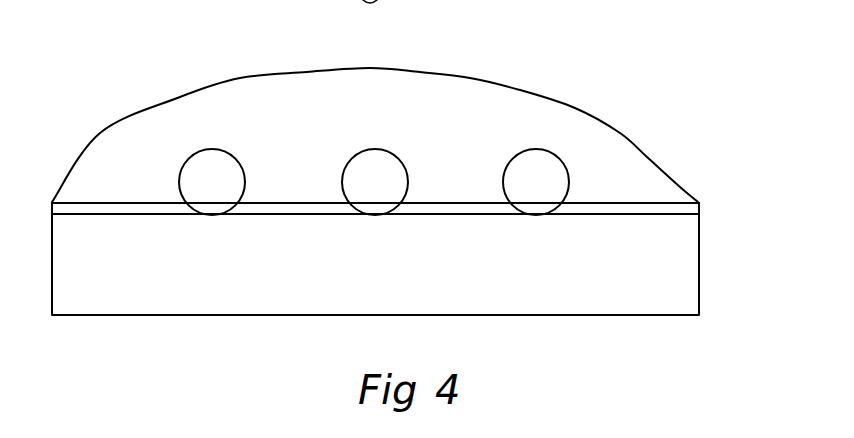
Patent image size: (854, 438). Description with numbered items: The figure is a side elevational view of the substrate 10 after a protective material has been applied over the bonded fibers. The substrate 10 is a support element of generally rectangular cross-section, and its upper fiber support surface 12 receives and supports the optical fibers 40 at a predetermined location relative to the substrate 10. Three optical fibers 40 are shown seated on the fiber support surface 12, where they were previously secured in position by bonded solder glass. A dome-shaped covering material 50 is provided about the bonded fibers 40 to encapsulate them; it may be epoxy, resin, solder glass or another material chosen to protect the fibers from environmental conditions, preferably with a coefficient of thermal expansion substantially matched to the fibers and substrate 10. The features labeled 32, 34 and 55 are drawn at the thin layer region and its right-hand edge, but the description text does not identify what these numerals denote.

The substrate 10 is at (687, 272).
The fiber support surface 12 is at (445, 212).
The top surface layer 32 is at (80, 203).
The layer edge 34 is at (663, 218).
The optical fibers 40 is at (550, 177).
The covering material 50 is at (458, 93).
The interface 55 is at (698, 212).